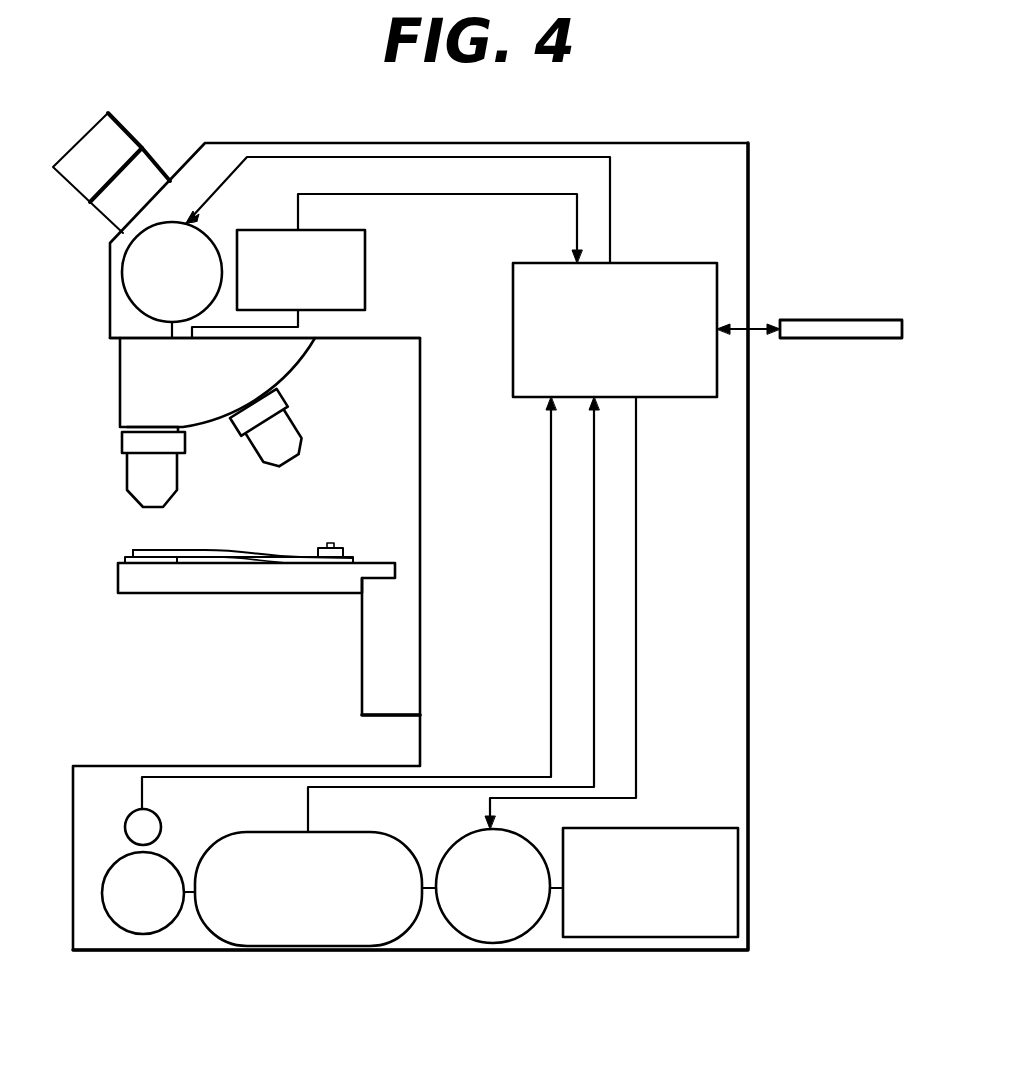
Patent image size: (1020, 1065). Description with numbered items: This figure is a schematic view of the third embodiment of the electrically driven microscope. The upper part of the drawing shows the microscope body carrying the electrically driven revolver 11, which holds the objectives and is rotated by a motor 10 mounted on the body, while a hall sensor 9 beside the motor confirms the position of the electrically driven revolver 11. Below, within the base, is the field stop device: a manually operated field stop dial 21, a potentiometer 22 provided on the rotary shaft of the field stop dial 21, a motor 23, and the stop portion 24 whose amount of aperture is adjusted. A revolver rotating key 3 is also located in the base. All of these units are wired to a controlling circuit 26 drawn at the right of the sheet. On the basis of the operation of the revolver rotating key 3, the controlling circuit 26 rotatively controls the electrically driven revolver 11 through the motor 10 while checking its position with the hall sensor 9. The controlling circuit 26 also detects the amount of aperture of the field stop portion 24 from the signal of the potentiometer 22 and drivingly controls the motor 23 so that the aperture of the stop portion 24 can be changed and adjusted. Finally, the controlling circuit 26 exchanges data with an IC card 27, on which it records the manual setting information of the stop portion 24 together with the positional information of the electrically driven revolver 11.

The revolver rotating key 3 is at (127, 820).
The hall sensor 9 is at (365, 245).
The motor 10 is at (120, 275).
The electrically driven revolver 11 is at (132, 392).
The field stop dial 21 is at (157, 934).
The potentiometer 22 is at (388, 947).
The motor 23 is at (523, 938).
The stop portion 24 is at (713, 938).
The controlling circuit 26 is at (698, 262).
The IC card 27 is at (877, 318).